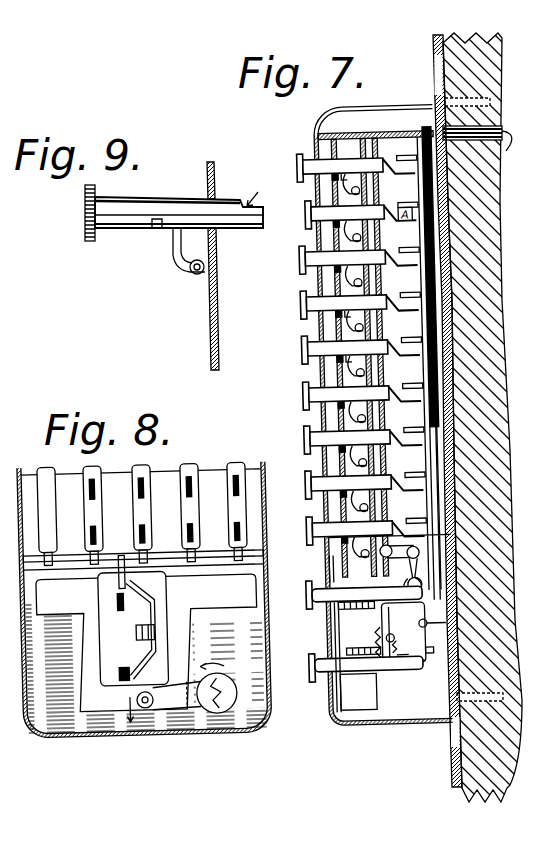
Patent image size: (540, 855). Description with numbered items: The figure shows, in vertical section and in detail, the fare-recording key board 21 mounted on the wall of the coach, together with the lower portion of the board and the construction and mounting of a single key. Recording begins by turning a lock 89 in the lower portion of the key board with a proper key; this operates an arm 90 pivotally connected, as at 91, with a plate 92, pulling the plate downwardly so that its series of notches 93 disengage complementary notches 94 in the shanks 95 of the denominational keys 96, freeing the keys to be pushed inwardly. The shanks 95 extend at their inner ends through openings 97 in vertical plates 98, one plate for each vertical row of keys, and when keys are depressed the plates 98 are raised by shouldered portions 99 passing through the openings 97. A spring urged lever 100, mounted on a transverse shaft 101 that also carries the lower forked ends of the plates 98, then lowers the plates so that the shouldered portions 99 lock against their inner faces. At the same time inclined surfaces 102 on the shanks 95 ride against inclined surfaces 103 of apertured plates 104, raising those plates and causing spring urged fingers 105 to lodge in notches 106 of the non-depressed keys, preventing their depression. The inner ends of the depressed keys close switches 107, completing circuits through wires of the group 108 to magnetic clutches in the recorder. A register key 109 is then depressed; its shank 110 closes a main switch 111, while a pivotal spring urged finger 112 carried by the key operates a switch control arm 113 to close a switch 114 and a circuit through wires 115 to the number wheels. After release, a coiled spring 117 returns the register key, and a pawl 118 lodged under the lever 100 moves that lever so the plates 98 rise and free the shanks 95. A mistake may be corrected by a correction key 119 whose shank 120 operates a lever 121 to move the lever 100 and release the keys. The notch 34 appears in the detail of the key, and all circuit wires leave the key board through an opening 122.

In FIG. 7, the key board 21 is at (384, 107).
In FIG. 8, the key board 21 is at (56, 737).
In FIG. 9, the notch 34 is at (158, 231).
In FIG. 8, the lock 89 is at (222, 714).
In FIG. 8, the arm 90 is at (174, 707).
In FIG. 8, the pivotal connection 91 is at (140, 708).
In FIG. 7, the plate 92 is at (297, 533).
In FIG. 8, the plate 92 is at (78, 668).
In FIG. 7, the notches 93 is at (314, 150).
In FIG. 7, the complementary notches 94 is at (313, 379).
In FIG. 7, the shanks 95 is at (298, 248).
In FIG. 8, the shanks 95 is at (88, 470).
In FIG. 9, the shanks 95 is at (165, 198).
In FIG. 7, the denominational keys 96 is at (295, 167).
In FIG. 9, the denominational keys 96 is at (88, 244).
In FIG. 7, the openings 97 is at (404, 347).
In FIG. 8, the openings 97 is at (226, 468).
In FIG. 7, the vertical plates 98 is at (375, 199).
In FIG. 8, the vertical plates 98 is at (145, 500).
In FIG. 7, the shouldered portions 99 is at (410, 377).
In FIG. 9, the shouldered portions 99 is at (249, 193).
In FIG. 7, the spring urged lever 100 is at (387, 557).
In FIG. 8, the spring urged lever 100 is at (126, 617).
In FIG. 7, the transverse shaft 101 is at (414, 545).
In FIG. 8, the transverse shaft 101 is at (218, 559).
In FIG. 7, the inclined surfaces 102 is at (370, 470).
In FIG. 9, the inclined surfaces 102 is at (245, 217).
In FIG. 9, the inclined surfaces 103 is at (214, 190).
In FIG. 7, the apertured plates 104 is at (335, 140).
In FIG. 9, the apertured plates 104 is at (212, 305).
In FIG. 7, the spring urged fingers 105 is at (330, 483).
In FIG. 9, the spring urged fingers 105 is at (187, 270).
In FIG. 9, the notches 106 is at (181, 235).
In FIG. 7, the switches 107 is at (457, 202).
In FIG. 7, the group of wires 108 is at (446, 224).
In FIG. 7, the register key 109 is at (290, 592).
In FIG. 7, the shank 110 is at (310, 613).
In FIG. 7, the main switch 111 is at (436, 615).
In FIG. 7, the pivotal spring urged finger 112 is at (380, 613).
In FIG. 7, the switch control arm 113 is at (405, 633).
In FIG. 7, the switch 114 is at (405, 665).
In FIG. 7, the wires 115 is at (368, 640).
In FIG. 7, the coiled spring 117 is at (302, 582).
In FIG. 7, the pawl 118 is at (409, 578).
In FIG. 7, the correction key 119 is at (294, 672).
In FIG. 7, the shank 120 is at (326, 694).
In FIG. 7, the lever 121 is at (440, 650).
In FIG. 8, the lever 121 is at (132, 626).
In FIG. 7, the opening 122 is at (482, 417).